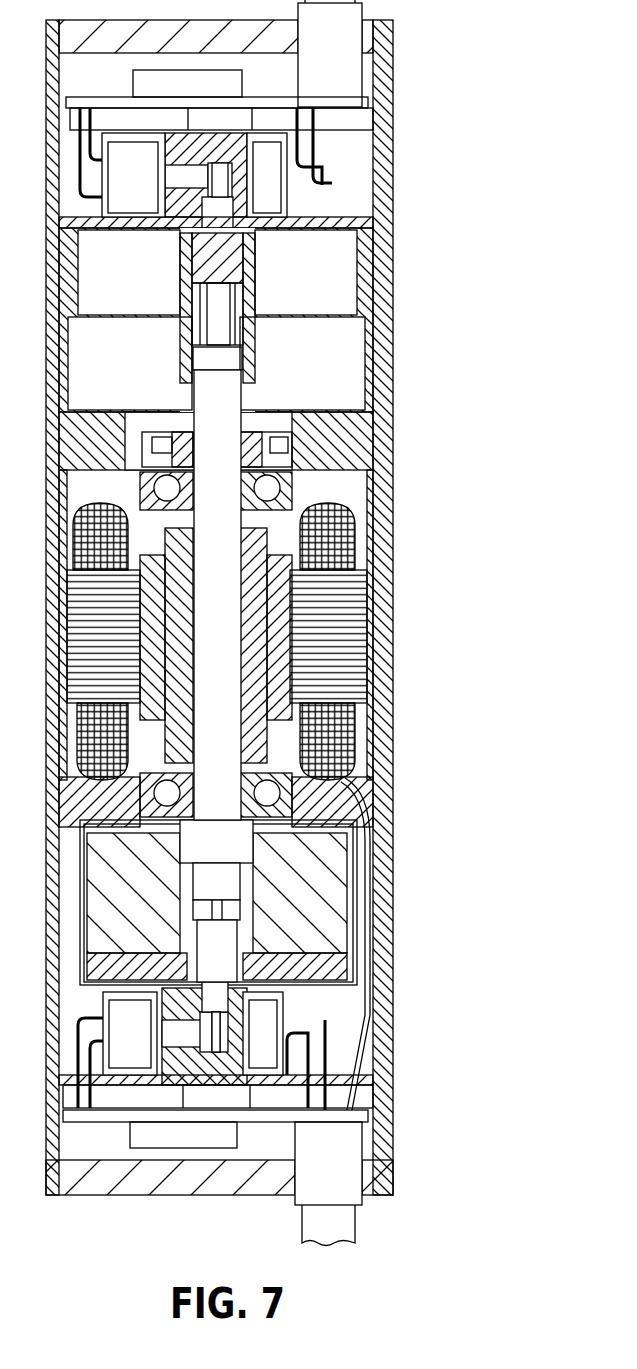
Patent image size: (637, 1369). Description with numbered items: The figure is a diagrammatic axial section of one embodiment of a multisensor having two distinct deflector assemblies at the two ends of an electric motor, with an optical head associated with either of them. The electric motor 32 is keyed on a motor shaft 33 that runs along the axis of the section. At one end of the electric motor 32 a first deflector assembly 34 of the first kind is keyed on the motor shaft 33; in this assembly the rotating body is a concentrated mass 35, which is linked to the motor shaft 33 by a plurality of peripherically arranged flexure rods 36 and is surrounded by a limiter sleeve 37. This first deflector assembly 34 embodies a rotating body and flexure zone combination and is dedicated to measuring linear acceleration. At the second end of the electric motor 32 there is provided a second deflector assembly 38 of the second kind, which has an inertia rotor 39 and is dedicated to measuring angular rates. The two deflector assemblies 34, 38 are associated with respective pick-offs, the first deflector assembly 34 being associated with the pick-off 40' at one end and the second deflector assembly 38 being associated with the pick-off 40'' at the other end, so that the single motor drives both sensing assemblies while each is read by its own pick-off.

The electric motor 32 is at (398, 578).
The motor shaft 33 is at (220, 403).
The first deflector assembly 34 is at (216, 320).
The concentrated mass 35 is at (220, 258).
The flexure rods 36 is at (235, 338).
The limiter sleeve 37 is at (188, 255).
The second deflector assembly 38 is at (301, 902).
The inertia rotor 39 is at (320, 873).
The pick-off 40' is at (283, 150).
The pick-off 40'' is at (299, 1065).